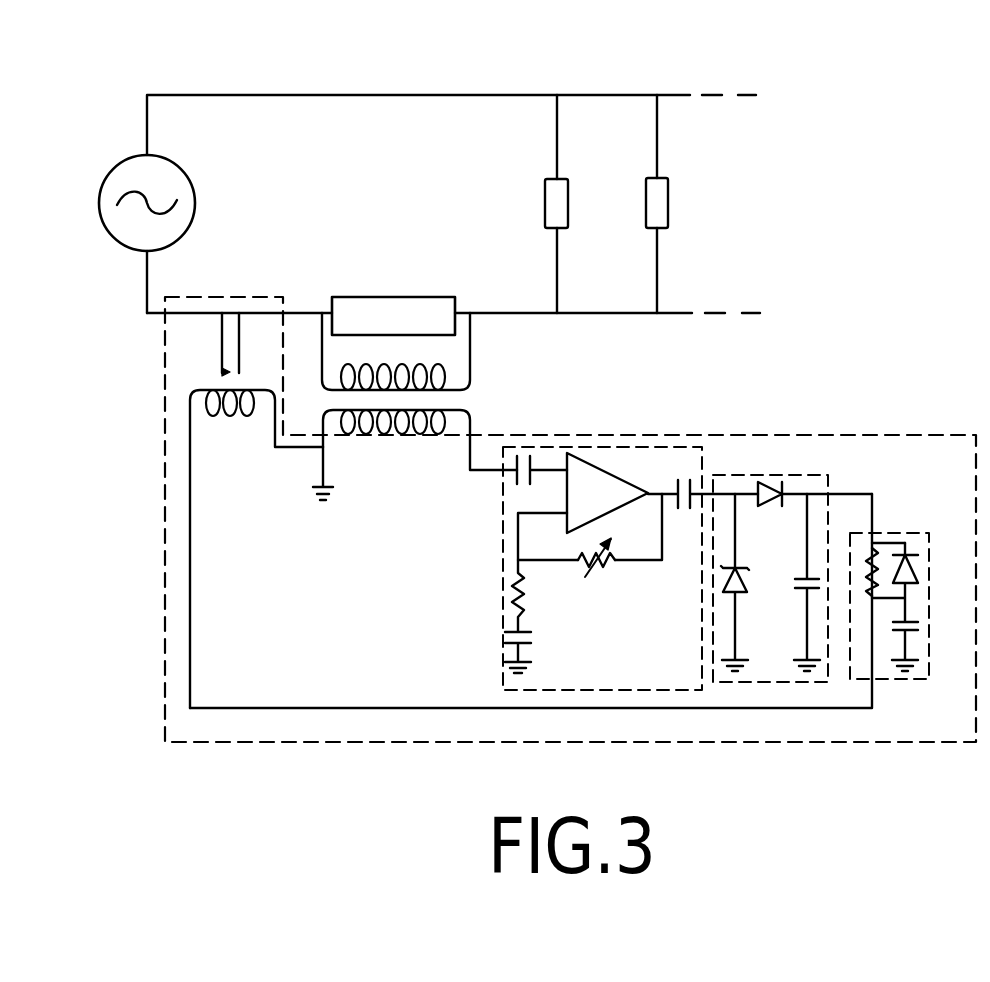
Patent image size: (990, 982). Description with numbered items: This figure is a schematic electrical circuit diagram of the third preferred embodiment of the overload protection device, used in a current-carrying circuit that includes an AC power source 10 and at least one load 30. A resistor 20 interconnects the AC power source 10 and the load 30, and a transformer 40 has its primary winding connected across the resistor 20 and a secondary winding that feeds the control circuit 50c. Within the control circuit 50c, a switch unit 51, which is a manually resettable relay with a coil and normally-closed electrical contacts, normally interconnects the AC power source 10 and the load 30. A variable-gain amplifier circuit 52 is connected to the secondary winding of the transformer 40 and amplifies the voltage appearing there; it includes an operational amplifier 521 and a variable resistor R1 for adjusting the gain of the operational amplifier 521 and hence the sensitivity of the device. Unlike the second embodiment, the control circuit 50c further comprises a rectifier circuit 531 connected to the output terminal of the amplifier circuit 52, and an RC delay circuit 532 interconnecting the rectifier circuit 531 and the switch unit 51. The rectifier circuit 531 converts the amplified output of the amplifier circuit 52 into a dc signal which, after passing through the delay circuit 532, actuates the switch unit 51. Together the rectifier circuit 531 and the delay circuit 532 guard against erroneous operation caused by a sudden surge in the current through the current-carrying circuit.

The AC power source 10 is at (195, 188).
The resistor 20 is at (413, 297).
The load 30 is at (558, 176).
The transformer 40 is at (470, 410).
The control circuit 50c is at (165, 477).
The switch unit 51 is at (215, 343).
The variable-gain amplifier circuit 52 is at (630, 516).
The operational amplifier 521 is at (600, 475).
The rectifier circuit 531 is at (800, 475).
The RC delay circuit 532 is at (912, 533).
The variable resistor R1 is at (596, 574).